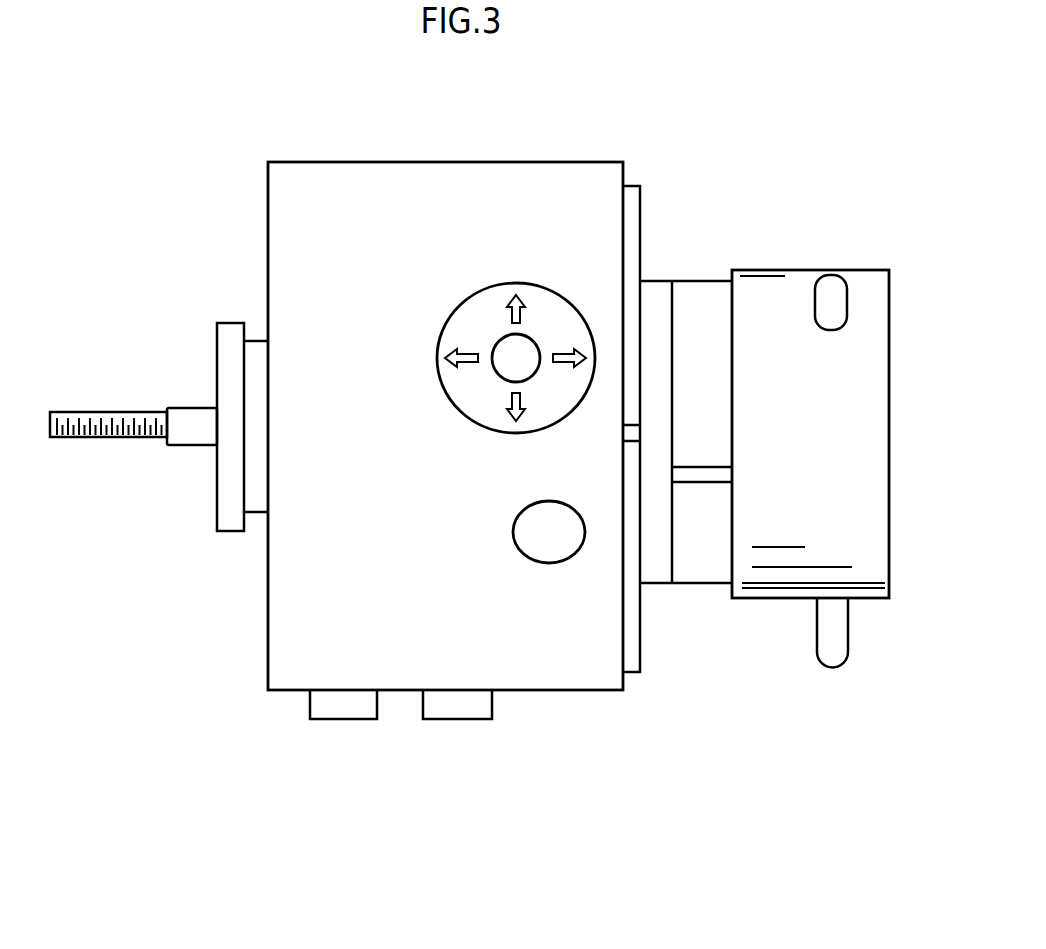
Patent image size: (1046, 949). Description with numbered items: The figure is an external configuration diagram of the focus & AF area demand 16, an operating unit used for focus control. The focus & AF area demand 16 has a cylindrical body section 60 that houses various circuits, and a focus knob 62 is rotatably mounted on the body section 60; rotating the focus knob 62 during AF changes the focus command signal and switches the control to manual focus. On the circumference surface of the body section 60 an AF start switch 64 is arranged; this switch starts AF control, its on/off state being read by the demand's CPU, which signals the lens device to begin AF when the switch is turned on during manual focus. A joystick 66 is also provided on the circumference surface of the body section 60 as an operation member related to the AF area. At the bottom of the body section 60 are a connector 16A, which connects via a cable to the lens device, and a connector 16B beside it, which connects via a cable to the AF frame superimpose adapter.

The focus & AF area demand 16 is at (602, 773).
The connector 16A is at (340, 719).
The connector 16B is at (457, 719).
The body section 60 is at (441, 162).
The focus knob 62 is at (872, 425).
The AF start switch 64 is at (513, 535).
The joystick 66 is at (509, 353).